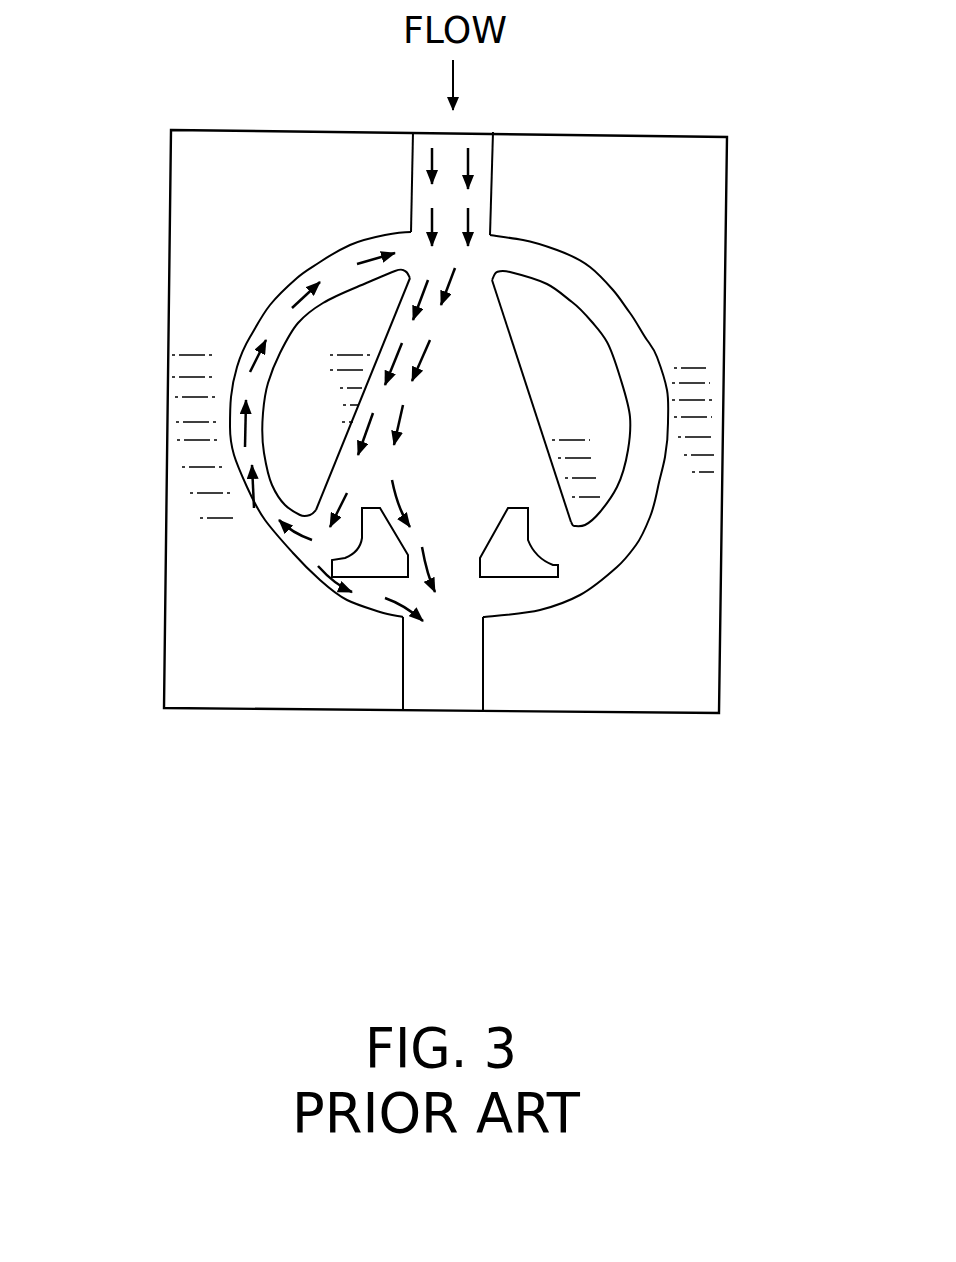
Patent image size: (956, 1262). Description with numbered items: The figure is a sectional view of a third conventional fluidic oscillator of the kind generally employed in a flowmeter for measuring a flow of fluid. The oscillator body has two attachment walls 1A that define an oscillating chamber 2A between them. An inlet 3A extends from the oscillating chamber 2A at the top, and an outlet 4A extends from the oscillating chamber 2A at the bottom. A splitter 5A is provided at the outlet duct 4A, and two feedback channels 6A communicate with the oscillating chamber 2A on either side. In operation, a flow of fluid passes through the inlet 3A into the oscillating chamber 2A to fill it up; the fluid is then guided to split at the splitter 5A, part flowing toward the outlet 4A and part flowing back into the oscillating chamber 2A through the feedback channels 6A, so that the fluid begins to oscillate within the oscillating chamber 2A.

The attachment walls 1A is at (337, 433).
The oscillating chamber 2A is at (470, 312).
The inlet 3A is at (460, 200).
The outlet 4A is at (440, 673).
The splitter 5A is at (380, 563).
The feedback channels 6A is at (268, 312).